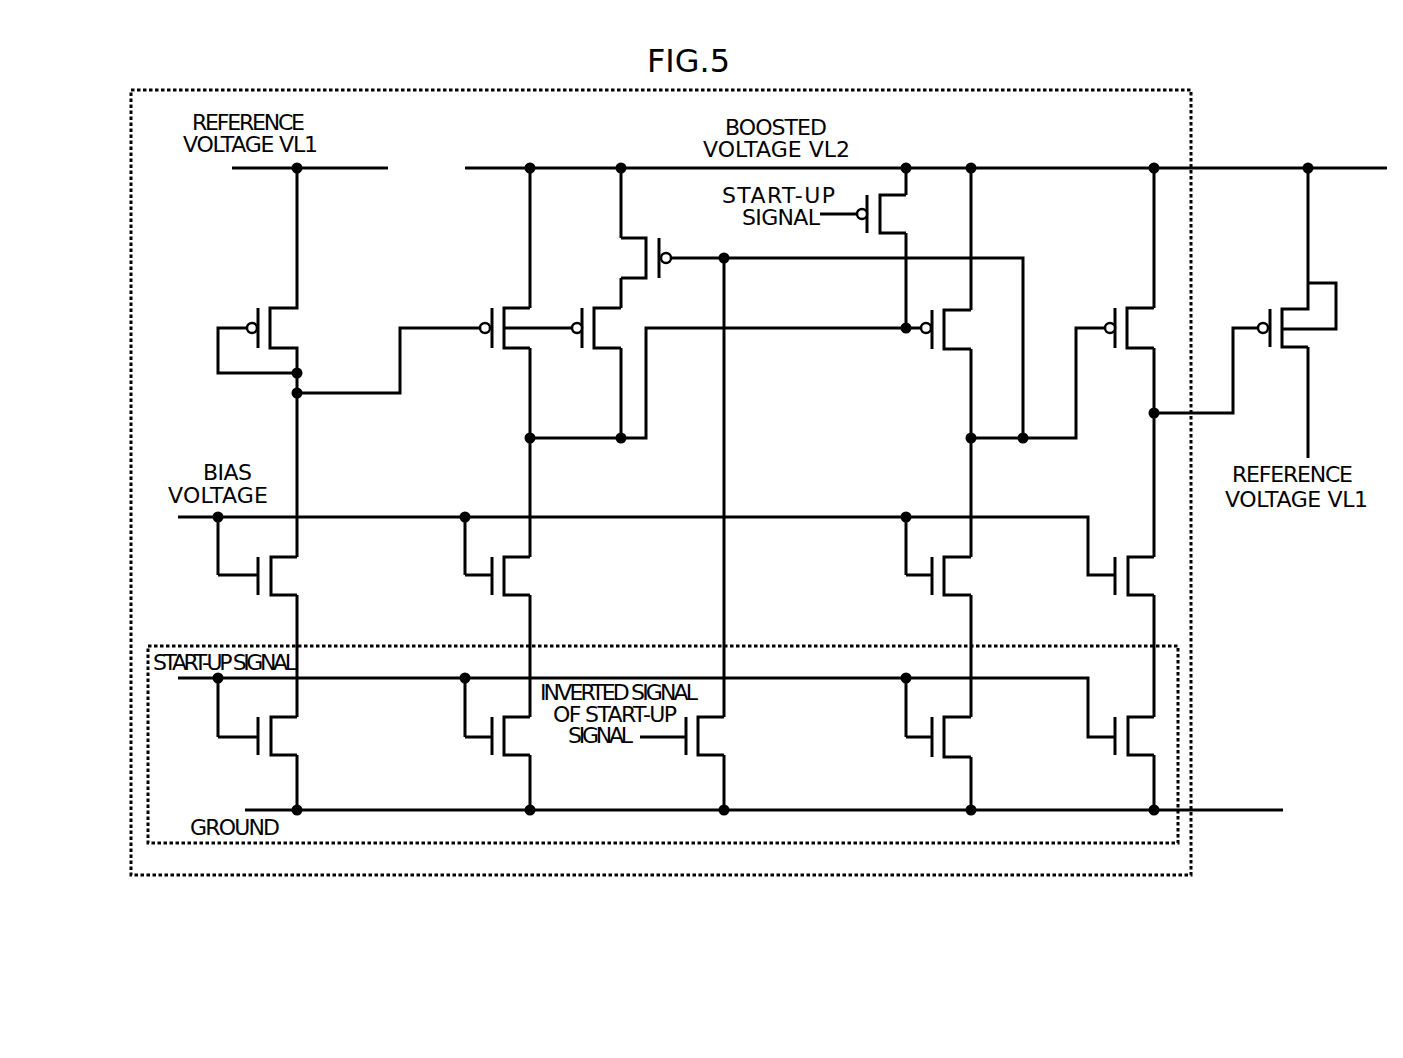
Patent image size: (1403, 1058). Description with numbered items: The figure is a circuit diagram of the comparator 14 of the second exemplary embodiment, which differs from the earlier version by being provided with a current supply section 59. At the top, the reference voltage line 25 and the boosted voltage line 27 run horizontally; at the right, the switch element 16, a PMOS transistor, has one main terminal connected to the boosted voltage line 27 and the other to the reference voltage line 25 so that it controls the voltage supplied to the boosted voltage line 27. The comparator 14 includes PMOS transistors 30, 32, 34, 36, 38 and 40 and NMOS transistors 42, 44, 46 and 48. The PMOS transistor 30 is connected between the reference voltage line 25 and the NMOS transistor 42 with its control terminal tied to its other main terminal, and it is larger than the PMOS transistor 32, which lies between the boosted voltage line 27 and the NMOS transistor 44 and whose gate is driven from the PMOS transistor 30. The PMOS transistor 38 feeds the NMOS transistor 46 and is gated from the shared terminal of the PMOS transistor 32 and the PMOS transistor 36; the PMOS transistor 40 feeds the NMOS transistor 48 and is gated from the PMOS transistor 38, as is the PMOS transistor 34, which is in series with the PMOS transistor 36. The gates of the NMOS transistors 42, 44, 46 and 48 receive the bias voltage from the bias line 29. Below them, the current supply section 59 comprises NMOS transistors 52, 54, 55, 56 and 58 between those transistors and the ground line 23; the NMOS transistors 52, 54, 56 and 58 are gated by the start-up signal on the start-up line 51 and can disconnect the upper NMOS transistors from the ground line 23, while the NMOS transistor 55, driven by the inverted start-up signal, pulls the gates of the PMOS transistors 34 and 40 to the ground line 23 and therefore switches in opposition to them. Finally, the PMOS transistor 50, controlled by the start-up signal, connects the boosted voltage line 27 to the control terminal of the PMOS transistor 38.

The comparator 14 is at (1140, 90).
The switch element 16 is at (1296, 359).
The ground line 23 is at (808, 809).
The reference voltage line 25 is at (326, 167).
The boosted voltage line 27 is at (862, 167).
The bias line 29 is at (797, 516).
The PMOS transistor 30 is at (283, 302).
The PMOS transistor 32 is at (512, 361).
The PMOS transistor 34 is at (610, 250).
The PMOS transistor 36 is at (608, 361).
The PMOS transistor 38 is at (952, 367).
The PMOS transistor 40 is at (1141, 366).
The NMOS transistor 42 is at (313, 584).
The NMOS transistor 44 is at (515, 598).
The NMOS transistor 46 is at (952, 598).
The NMOS transistor 48 is at (1142, 600).
The PMOS transistor 50 is at (908, 216).
The start-up line 51 is at (805, 679).
The NMOS transistor 52 is at (287, 760).
The NMOS transistor 54 is at (519, 763).
The NMOS transistor 55 is at (711, 763).
The NMOS transistor 56 is at (959, 763).
The NMOS transistor 58 is at (1141, 763).
The current supply section 59 is at (779, 646).